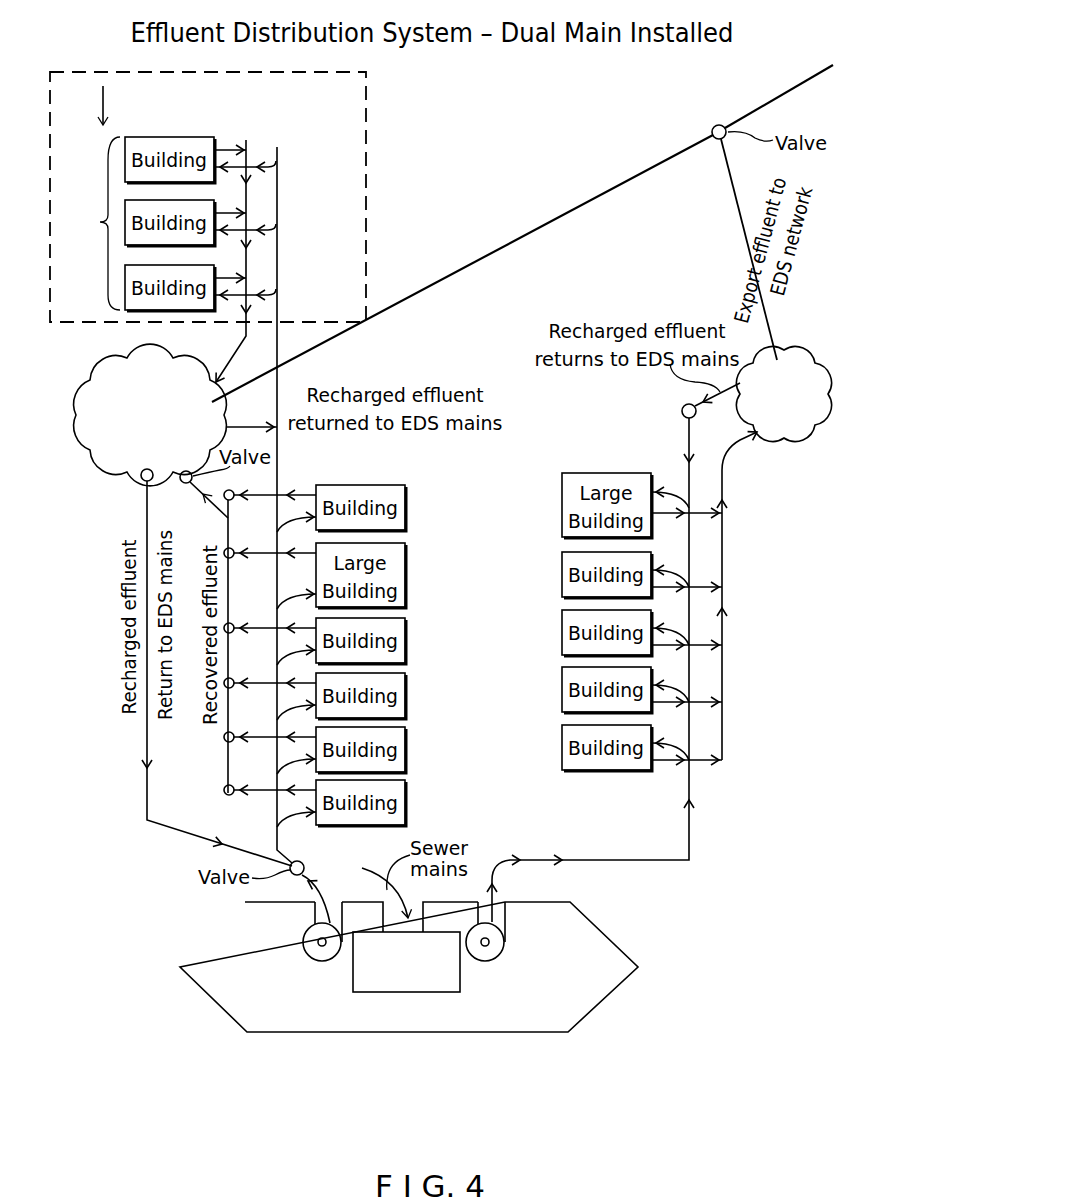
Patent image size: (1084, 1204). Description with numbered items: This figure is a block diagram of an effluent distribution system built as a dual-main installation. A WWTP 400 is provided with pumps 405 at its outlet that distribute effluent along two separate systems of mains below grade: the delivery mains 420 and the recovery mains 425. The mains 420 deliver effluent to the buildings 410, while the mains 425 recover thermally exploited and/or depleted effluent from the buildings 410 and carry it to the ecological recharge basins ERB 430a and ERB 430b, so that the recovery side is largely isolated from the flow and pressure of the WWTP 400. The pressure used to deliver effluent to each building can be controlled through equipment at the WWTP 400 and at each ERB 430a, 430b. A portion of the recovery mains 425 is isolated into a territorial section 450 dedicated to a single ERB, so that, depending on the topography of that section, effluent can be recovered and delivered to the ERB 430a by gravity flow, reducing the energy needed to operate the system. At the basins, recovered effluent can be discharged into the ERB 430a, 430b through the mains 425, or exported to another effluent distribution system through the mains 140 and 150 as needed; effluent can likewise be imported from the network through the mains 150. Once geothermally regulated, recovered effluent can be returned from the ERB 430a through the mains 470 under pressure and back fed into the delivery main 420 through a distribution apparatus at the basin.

The mains 140 is at (496, 250).
The mains 150 is at (778, 93).
The WWTP 400 is at (577, 1012).
The pumps 405 is at (303, 943).
The buildings 410 is at (100, 222).
The mains 420 is at (281, 852).
The mains 425 is at (237, 355).
The ERB 430a is at (93, 385).
The ERB 430b is at (862, 358).
The territorial section 450 is at (358, 155).
The mains 470 is at (148, 805).